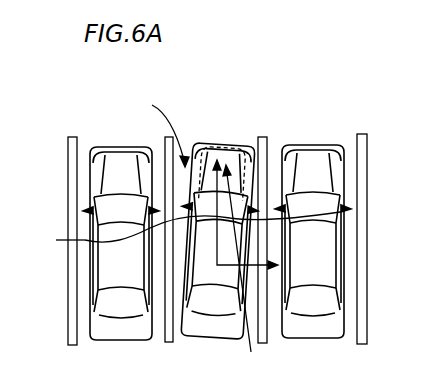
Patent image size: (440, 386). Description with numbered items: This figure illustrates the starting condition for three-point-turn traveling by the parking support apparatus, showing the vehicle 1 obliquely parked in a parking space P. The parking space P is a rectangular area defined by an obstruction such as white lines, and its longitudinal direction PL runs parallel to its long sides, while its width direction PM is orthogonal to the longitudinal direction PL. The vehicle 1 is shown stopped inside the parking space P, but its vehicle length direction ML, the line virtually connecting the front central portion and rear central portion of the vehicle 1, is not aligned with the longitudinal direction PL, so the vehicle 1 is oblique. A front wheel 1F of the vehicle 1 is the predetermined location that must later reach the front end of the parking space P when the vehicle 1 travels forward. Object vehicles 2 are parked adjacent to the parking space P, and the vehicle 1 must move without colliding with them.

The object vehicle 2 is at (118, 148).
The vehicle 1 is at (230, 140).
The front wheel 1F is at (213, 140).
The parking space P is at (161, 129).
The width direction PM is at (246, 275).
The longitudinal direction PL is at (56, 239).
The vehicle length direction ML is at (340, 212).